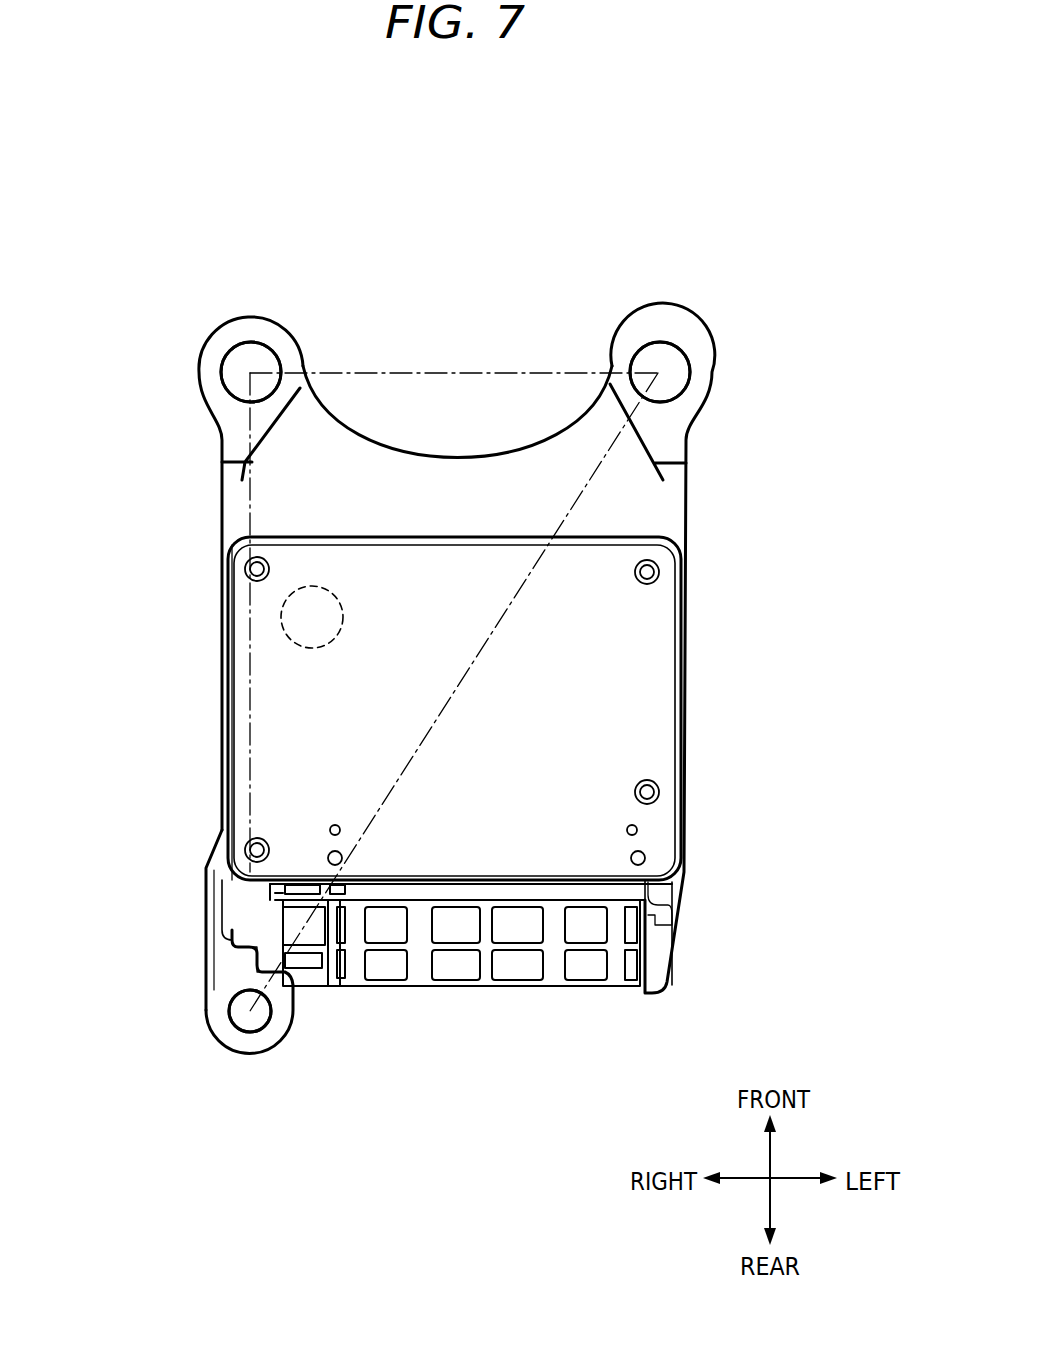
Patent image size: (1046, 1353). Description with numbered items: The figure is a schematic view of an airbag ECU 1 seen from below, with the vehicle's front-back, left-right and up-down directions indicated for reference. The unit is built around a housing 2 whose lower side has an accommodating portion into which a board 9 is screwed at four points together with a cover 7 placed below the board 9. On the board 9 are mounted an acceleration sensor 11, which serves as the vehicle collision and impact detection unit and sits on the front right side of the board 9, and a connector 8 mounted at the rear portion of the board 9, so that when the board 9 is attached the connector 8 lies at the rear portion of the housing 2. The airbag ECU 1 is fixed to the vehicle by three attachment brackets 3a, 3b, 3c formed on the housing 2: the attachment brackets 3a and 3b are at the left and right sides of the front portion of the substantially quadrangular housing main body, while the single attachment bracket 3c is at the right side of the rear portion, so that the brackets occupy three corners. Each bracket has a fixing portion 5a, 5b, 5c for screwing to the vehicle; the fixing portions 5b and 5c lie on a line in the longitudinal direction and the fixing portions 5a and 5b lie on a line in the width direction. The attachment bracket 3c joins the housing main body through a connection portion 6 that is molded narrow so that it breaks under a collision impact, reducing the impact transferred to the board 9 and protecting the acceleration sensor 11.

The airbag ECU 1 is at (466, 250).
The housing 2 is at (668, 518).
The attachment bracket 3a is at (710, 308).
The attachment bracket 3b is at (162, 349).
The attachment bracket 3c is at (175, 1030).
The fixing portion 5a is at (705, 378).
The fixing portion 5b is at (248, 330).
The fixing portion 5c is at (232, 1040).
The connection portion 6 is at (218, 944).
The cover 7 is at (450, 712).
The connector 8 is at (418, 975).
The board 9 is at (517, 890).
The acceleration sensor 11 is at (315, 640).